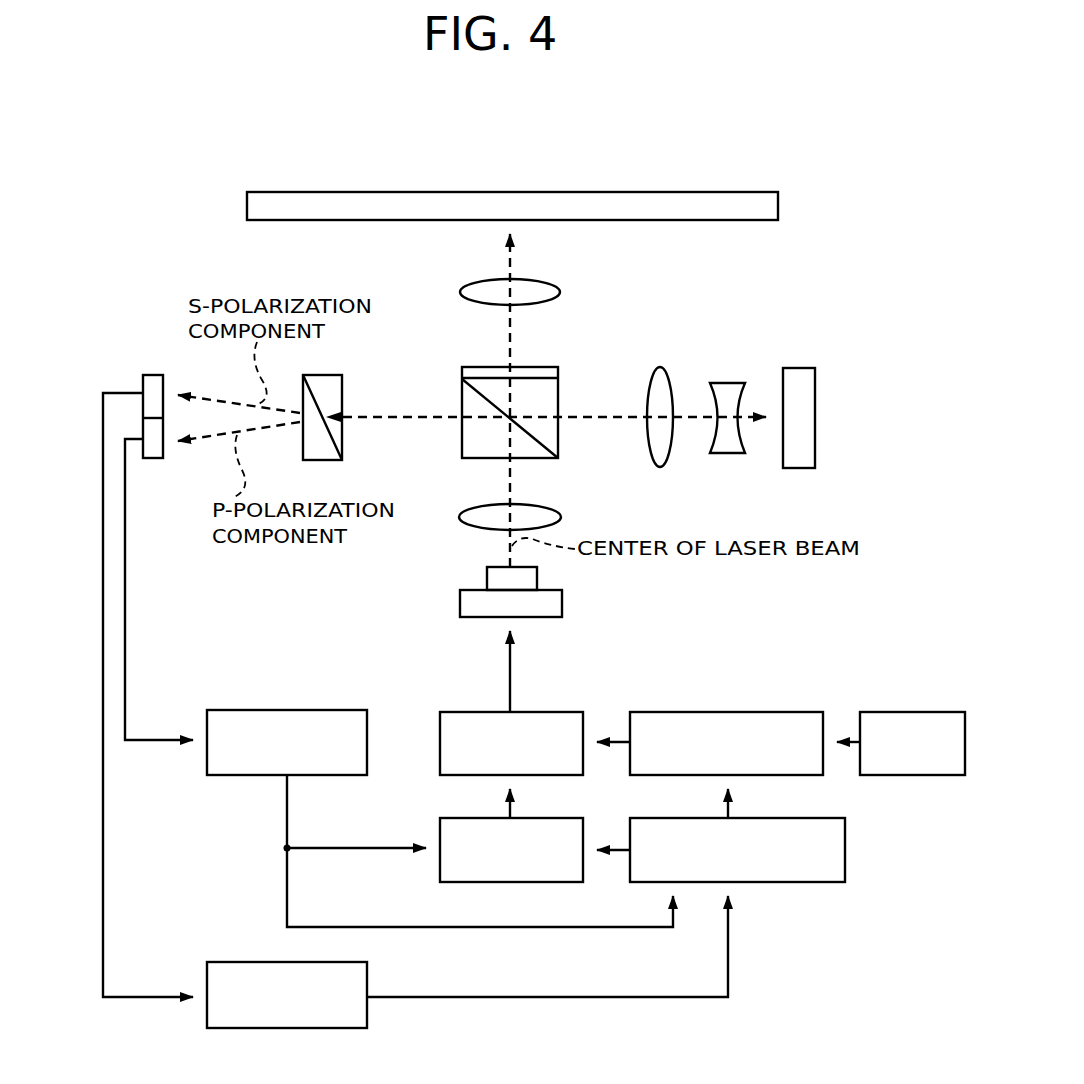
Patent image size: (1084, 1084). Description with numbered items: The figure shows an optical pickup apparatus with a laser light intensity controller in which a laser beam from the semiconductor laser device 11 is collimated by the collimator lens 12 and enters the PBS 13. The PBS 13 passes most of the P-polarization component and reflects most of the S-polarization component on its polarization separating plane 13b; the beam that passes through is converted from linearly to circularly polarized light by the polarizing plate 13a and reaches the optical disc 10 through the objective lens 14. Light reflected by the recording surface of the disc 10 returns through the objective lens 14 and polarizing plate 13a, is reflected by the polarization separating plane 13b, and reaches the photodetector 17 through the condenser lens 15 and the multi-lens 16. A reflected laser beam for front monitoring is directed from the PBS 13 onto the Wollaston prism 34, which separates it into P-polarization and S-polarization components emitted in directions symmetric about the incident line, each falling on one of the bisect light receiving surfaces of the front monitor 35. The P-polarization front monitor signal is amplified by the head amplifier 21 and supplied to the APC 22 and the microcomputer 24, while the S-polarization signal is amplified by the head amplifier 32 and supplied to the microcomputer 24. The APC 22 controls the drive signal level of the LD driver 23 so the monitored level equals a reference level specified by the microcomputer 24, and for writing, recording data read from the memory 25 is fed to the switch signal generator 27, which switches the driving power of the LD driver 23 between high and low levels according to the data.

The optical disc 10 is at (718, 192).
The semiconductor laser device 11 is at (562, 603).
The collimator lens 12 is at (560, 512).
The PBS (polarizing beam splitter) 13 is at (462, 440).
The polarizing plate 13a is at (470, 367).
The polarization separating plane 13b is at (543, 437).
The objective lens 14 is at (559, 289).
The condenser lens 15 is at (660, 367).
The multi-lens 16 is at (727, 383).
The photodetector 17 is at (800, 368).
The head amplifier 21 is at (293, 710).
The APC (automatic power controller) 22 is at (446, 818).
The LD driver 23 is at (487, 712).
The microcomputer 24 is at (845, 838).
The memory 25 is at (903, 712).
The switch signal generator 27 is at (730, 712).
The head amplifier 32 is at (245, 962).
The Wollaston prism 34 is at (342, 385).
The front monitor 35 is at (143, 376).